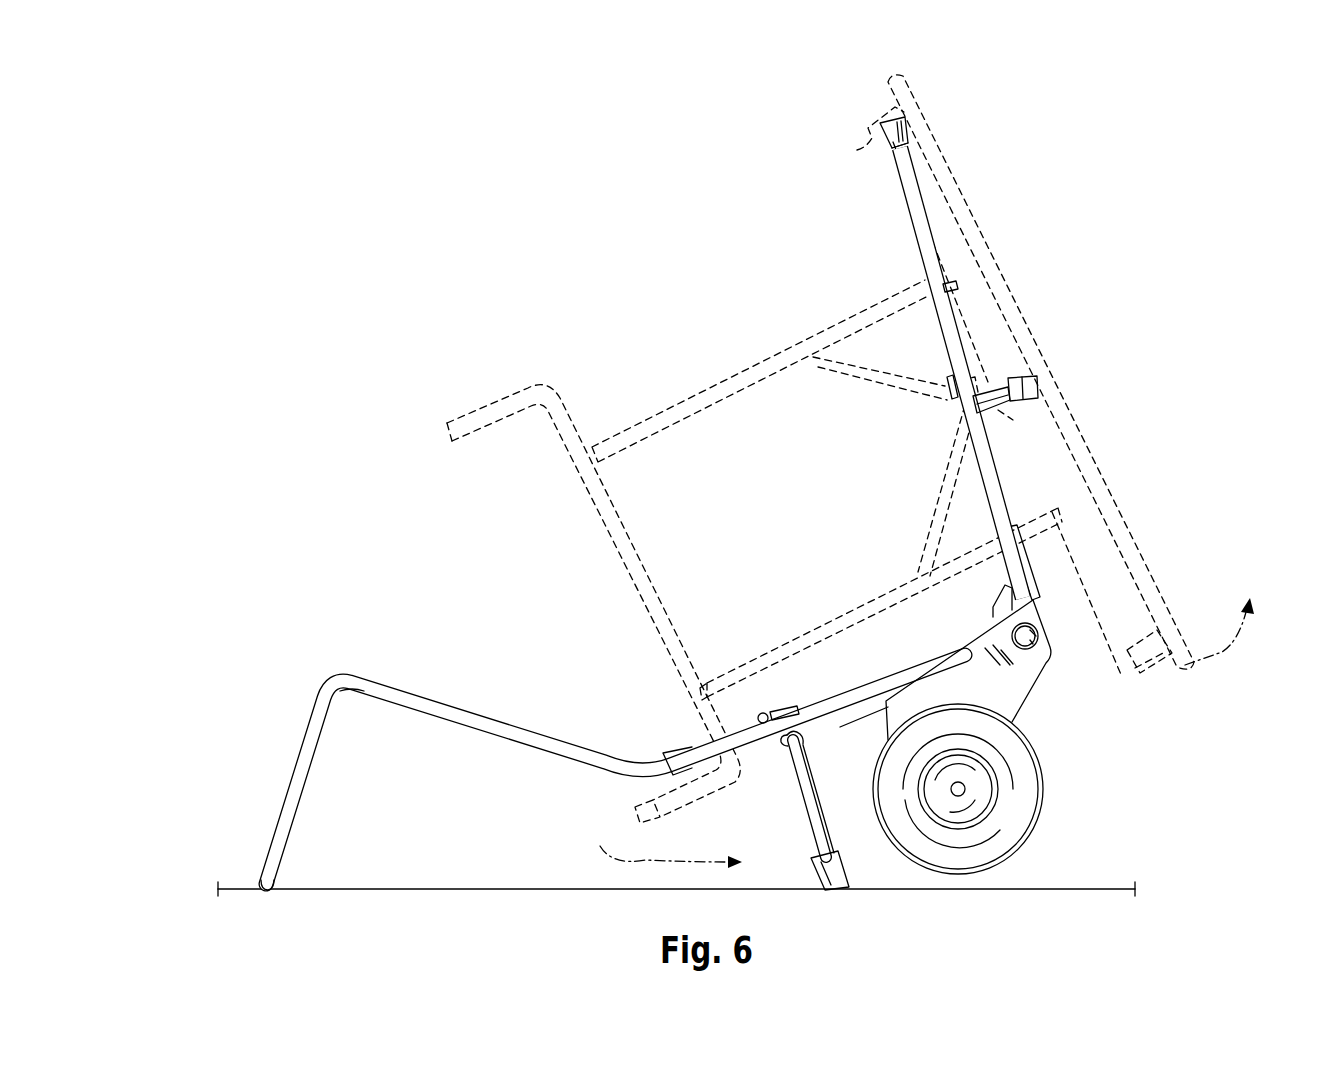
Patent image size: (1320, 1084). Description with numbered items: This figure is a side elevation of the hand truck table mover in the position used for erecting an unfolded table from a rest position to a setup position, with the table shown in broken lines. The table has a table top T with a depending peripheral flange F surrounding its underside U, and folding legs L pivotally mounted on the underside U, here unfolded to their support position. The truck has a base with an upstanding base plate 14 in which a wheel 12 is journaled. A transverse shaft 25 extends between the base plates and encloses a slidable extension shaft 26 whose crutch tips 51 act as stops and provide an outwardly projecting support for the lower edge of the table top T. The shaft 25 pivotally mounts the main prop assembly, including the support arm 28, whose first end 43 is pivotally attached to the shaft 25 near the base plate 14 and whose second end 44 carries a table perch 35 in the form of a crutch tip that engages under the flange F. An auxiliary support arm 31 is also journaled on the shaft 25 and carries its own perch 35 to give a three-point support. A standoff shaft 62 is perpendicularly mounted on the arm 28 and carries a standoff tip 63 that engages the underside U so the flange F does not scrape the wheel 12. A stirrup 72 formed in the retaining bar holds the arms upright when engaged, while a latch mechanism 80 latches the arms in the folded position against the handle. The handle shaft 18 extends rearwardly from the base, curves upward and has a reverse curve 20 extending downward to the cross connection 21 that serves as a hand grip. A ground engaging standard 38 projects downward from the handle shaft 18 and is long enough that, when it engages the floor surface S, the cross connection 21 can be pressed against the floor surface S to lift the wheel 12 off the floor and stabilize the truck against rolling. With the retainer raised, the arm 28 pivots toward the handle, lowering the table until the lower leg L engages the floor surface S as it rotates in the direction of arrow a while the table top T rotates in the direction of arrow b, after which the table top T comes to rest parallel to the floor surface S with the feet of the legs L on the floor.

The wheel 12 is at (1043, 789).
The base plate 14 is at (980, 692).
The handle shaft 18 is at (420, 696).
The reverse curve portion 20 is at (334, 684).
The cross connection second end 21 is at (262, 884).
The transverse shaft 25 is at (1039, 640).
The extension shaft 26 is at (1010, 642).
The support arm 28 is at (923, 332).
The auxiliary support arm 31 is at (886, 680).
The table perch 35 is at (886, 148).
The ground engaging standard 38 is at (797, 785).
The first end 43 is at (1036, 588).
The second end 44 is at (895, 158).
The crutch tip 51 is at (1030, 650).
The standoff shaft 62 is at (1000, 405).
The standoff tip 63 is at (1030, 376).
The stirrup 72 is at (992, 611).
The latch mechanism 80 is at (766, 712).
The floor surface S is at (403, 888).
The table top T is at (1000, 254).
The folding legs L is at (716, 384).
The underside U is at (1122, 677).
The peripheral flange F is at (858, 146).
The arrow a is at (663, 842).
The arrow b is at (1232, 634).